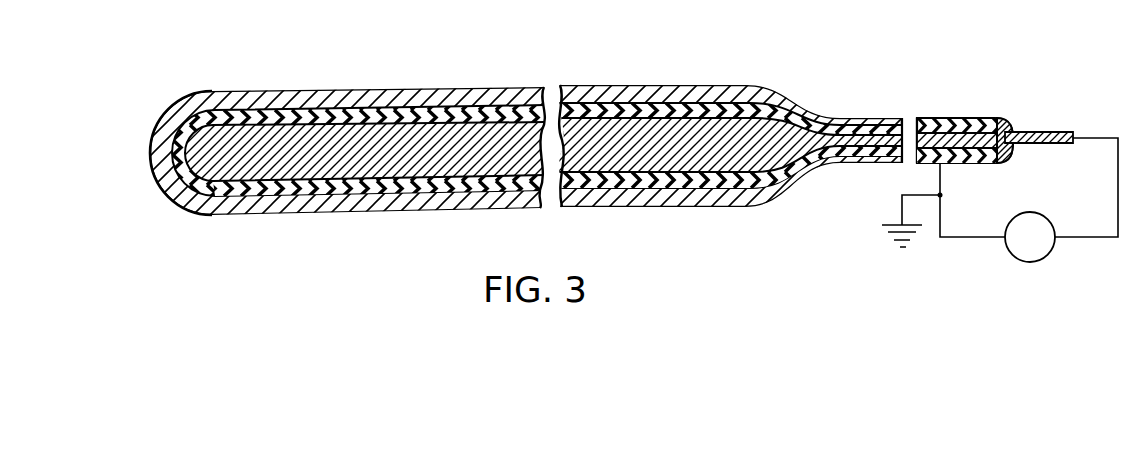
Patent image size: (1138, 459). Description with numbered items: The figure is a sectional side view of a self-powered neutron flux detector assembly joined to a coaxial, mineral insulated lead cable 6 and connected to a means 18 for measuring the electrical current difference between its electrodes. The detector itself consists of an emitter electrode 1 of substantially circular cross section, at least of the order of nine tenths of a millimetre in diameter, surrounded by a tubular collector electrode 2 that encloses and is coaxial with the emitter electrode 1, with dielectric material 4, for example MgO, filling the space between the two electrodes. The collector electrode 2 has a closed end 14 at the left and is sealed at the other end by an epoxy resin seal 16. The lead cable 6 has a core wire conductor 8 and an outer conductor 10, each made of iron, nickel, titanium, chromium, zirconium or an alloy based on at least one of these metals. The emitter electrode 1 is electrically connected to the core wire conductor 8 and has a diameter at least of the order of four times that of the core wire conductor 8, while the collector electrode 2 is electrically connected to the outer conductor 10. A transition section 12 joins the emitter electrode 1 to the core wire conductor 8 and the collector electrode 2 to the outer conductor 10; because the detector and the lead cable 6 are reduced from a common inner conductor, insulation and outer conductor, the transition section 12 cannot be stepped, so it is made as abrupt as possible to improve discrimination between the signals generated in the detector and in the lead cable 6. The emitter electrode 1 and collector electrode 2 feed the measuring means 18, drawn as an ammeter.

The emitter electrode 1 is at (323, 160).
The collector electrode 2 is at (410, 202).
The dielectric material 4 is at (622, 182).
The lead cable 6 is at (927, 115).
The core wire conductor 8 is at (908, 127).
The outer conductor 10 is at (967, 122).
The transition section 12 is at (811, 100).
The closed end 14 is at (153, 175).
The epoxy resin seal 16 is at (1022, 127).
The means for measuring an electrical current difference 18 is at (1010, 255).